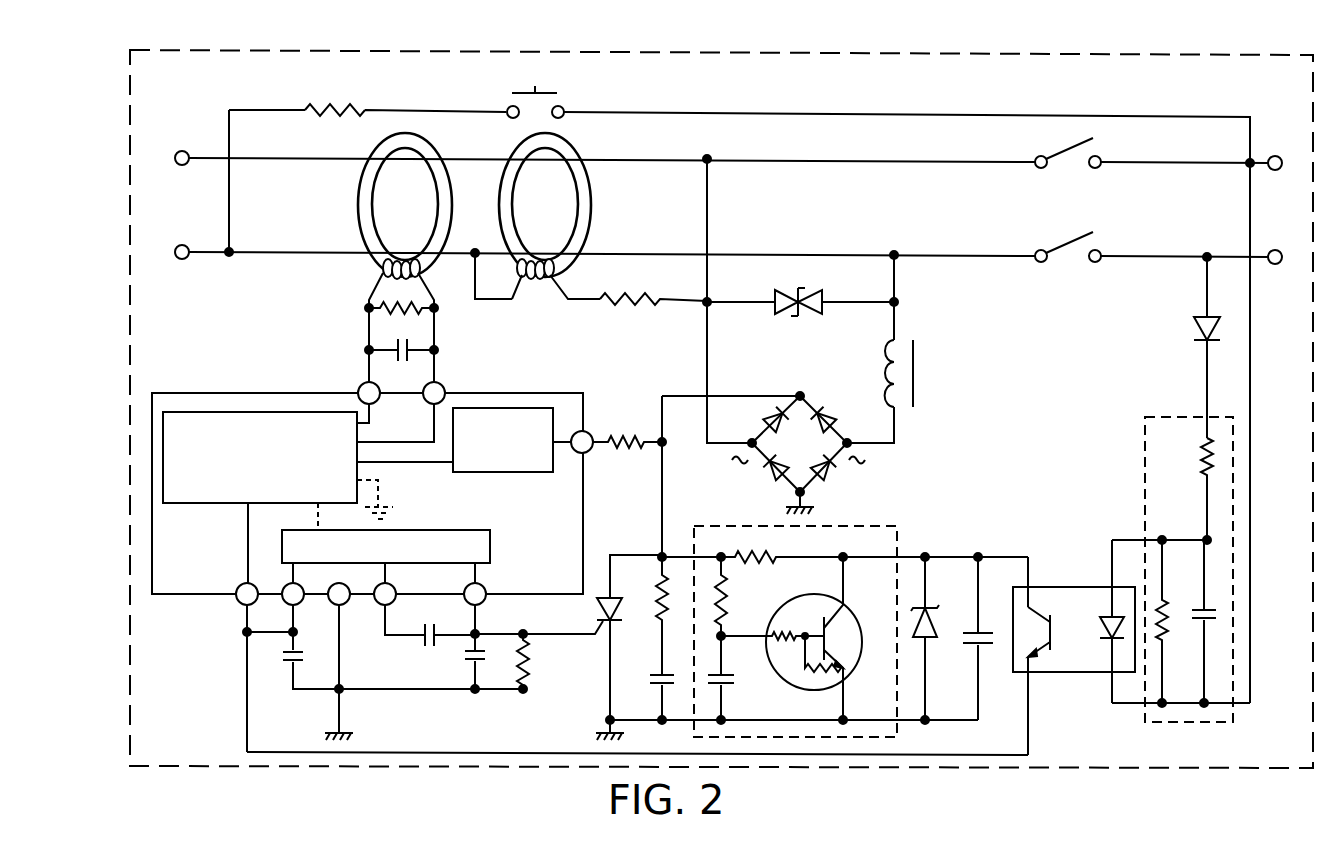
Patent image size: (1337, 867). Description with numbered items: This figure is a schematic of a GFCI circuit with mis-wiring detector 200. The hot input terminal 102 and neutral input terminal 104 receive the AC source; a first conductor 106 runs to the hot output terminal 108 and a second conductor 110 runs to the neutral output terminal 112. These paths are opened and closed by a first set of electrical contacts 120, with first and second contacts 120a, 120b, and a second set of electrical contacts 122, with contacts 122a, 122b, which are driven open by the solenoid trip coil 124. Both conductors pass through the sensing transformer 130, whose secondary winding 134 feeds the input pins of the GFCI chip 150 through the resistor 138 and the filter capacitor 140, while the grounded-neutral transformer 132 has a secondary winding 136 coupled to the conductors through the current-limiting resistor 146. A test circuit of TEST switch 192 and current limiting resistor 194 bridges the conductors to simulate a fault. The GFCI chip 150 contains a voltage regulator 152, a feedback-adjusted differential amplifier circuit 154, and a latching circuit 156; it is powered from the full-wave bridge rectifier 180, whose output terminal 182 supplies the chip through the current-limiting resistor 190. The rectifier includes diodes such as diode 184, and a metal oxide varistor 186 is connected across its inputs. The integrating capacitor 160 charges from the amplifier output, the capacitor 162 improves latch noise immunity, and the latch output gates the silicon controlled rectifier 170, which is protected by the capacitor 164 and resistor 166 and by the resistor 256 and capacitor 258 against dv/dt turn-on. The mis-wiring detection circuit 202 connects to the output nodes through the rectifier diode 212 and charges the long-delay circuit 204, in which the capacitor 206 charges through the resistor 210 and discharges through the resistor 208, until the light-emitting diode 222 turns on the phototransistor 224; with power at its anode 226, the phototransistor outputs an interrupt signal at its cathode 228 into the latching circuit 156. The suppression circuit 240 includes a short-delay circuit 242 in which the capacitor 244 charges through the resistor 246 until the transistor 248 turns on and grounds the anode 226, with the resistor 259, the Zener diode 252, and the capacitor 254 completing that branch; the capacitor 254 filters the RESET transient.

The hot input terminal 102 is at (178, 150).
The neutral input terminal 104 is at (178, 244).
The first conductor 106 is at (660, 157).
The hot output terminal 108 is at (1277, 153).
The second conductor 110 is at (648, 250).
The neutral output terminal 112 is at (1280, 247).
The first set of electrical contacts 120 is at (1068, 139).
The first contact 120a is at (1036, 172).
The second contact 120b is at (1105, 150).
The second set of electrical contacts 122 is at (1099, 250).
The first contact 122a is at (1040, 268).
The second contact 122b is at (1134, 244).
The solenoid trip coil 124 is at (903, 332).
The sensing transformer 130 is at (440, 143).
The grounded-neutral transformer 132 is at (580, 143).
The secondary winding 134 is at (398, 260).
The secondary winding 136 is at (533, 262).
The resistor 138 is at (440, 315).
The filter capacitor 140 is at (435, 355).
The current-limiting resistor 146 is at (628, 316).
The GFCI chip 150 is at (372, 478).
The voltage regulator 152 is at (505, 472).
The feedback-adjusted differential amplifier circuit 154 is at (217, 503).
The latching circuit 156 is at (455, 530).
The integrating capacitor 160 is at (285, 665).
The capacitor 162 is at (416, 636).
The capacitor 164 is at (464, 662).
The resistor 166 is at (540, 655).
The silicon controlled rectifier 170 is at (625, 612).
The full-wave bridge rectifier 180 is at (852, 480).
The output terminal of the full-wave bridge rectifier 182 is at (803, 390).
The rectifier diode 184 is at (750, 440).
The metal oxide varistor 186 is at (812, 318).
The current-limiting resistor 190 is at (620, 432).
The TEST switch 192 is at (560, 93).
The current limiting resistor 194 is at (358, 105).
The GFCI circuit with mis-wiring detector 200 is at (223, 33).
The mis-wiring detection circuit 202 is at (1122, 392).
The long-delay circuit 204 is at (1143, 440).
The capacitor 206 is at (1200, 625).
The resistor 208 is at (1170, 600).
The resistor 210 is at (1200, 475).
The rectifier diode 212 is at (1192, 330).
The light-emitting diode 222 is at (1106, 644).
The phototransistor 224 is at (1056, 625).
The anode of the phototransistor 226 is at (1030, 555).
The cathode of the phototransistor 228 is at (1032, 720).
The suppression circuit 240 is at (952, 515).
The short-delay circuit 242 is at (730, 522).
The capacitor 244 is at (735, 690).
The resistor 246 is at (727, 600).
The transistor 248 is at (845, 615).
The zener diode 252 is at (935, 615).
The capacitor 254 is at (965, 645).
The resistor 256 is at (655, 596).
The capacitor 258 is at (655, 692).
The resistor 259 is at (772, 550).